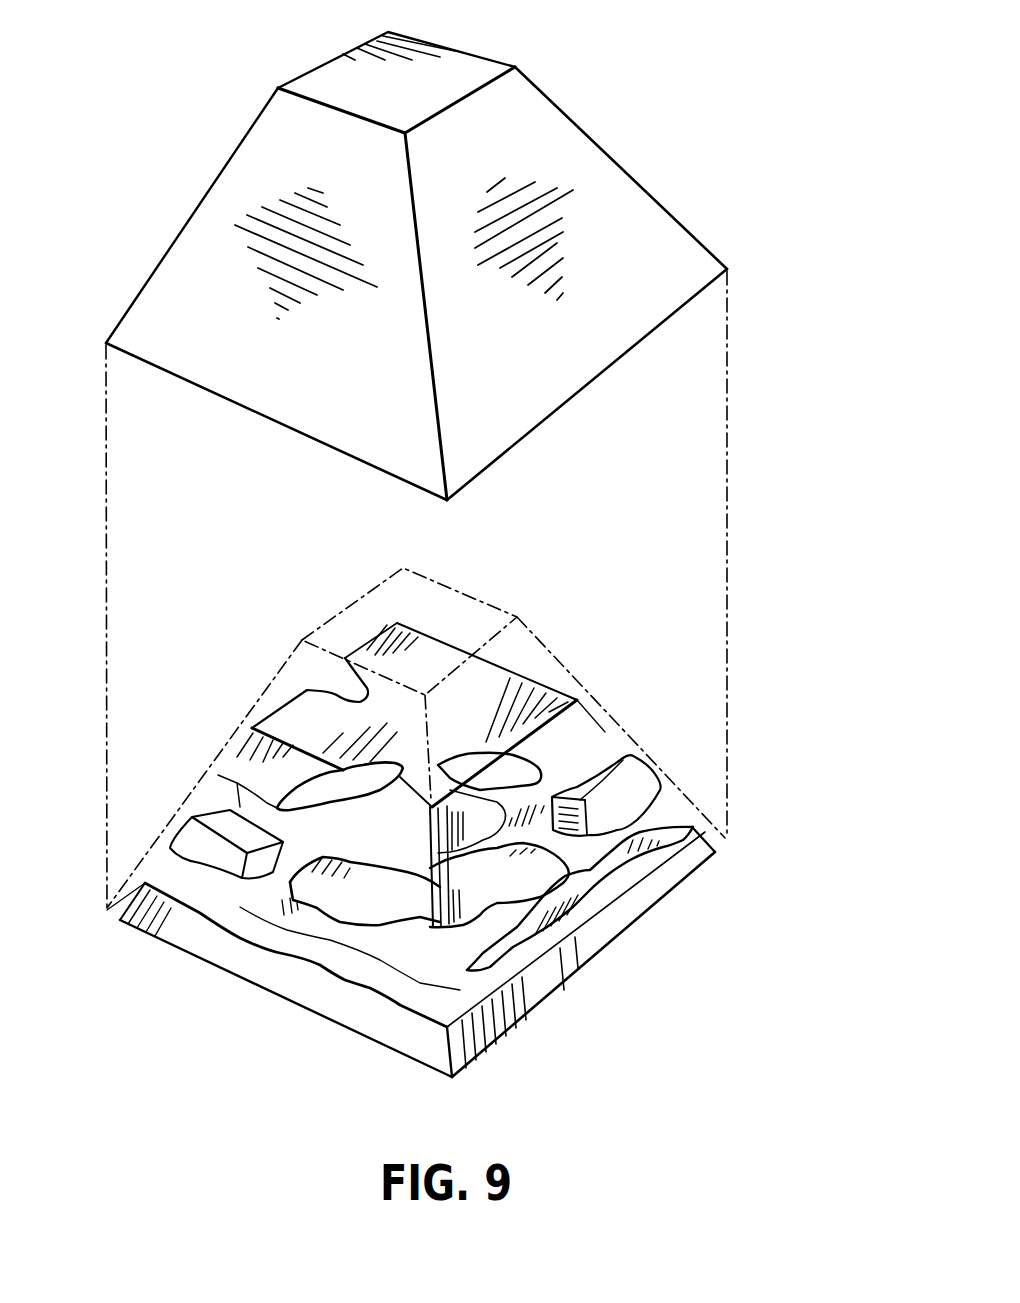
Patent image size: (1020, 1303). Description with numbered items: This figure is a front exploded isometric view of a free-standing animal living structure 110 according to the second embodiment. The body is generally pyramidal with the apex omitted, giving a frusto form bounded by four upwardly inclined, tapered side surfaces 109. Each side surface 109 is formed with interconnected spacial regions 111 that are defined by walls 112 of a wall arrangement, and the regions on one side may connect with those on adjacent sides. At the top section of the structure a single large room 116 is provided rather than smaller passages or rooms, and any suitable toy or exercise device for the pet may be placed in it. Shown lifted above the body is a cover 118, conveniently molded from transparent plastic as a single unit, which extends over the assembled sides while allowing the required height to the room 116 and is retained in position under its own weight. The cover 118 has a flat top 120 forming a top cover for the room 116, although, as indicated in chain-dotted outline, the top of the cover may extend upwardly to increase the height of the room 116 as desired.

The side surface 109 is at (260, 973).
The free-standing structure 110 is at (772, 320).
The spacial regions 111 is at (602, 753).
The walls 112 is at (730, 912).
The large room 116 is at (543, 668).
The cover 118 is at (622, 165).
The flat top 120 is at (467, 52).